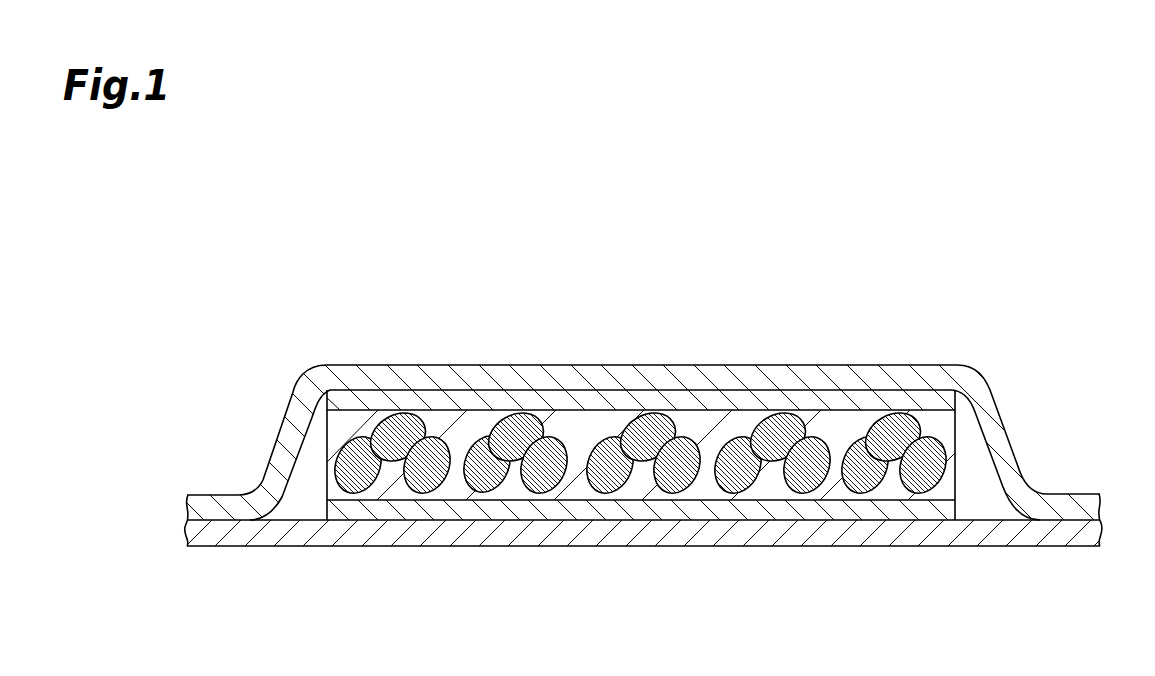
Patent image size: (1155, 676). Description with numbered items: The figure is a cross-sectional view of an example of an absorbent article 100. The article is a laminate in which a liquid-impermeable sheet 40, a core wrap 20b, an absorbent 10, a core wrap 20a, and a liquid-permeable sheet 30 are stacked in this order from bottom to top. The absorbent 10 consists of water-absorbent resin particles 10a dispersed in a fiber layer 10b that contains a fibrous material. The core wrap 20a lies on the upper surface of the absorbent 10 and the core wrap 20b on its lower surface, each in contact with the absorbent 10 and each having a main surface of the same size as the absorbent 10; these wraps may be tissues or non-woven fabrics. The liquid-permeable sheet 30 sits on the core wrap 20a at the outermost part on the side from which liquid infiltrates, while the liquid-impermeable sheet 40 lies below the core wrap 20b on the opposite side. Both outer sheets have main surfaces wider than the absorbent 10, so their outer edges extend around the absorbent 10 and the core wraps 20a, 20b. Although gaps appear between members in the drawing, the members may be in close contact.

The absorbent article 100 is at (1009, 282).
The absorbent 10 is at (1097, 373).
The water-absorbent resin particles 10a is at (943, 465).
The fiber layer 10b is at (937, 428).
The core wrap 20a is at (617, 397).
The core wrap 20b is at (667, 510).
The liquid-permeable sheet 30 is at (470, 377).
The liquid-impermeable sheet 40 is at (500, 532).